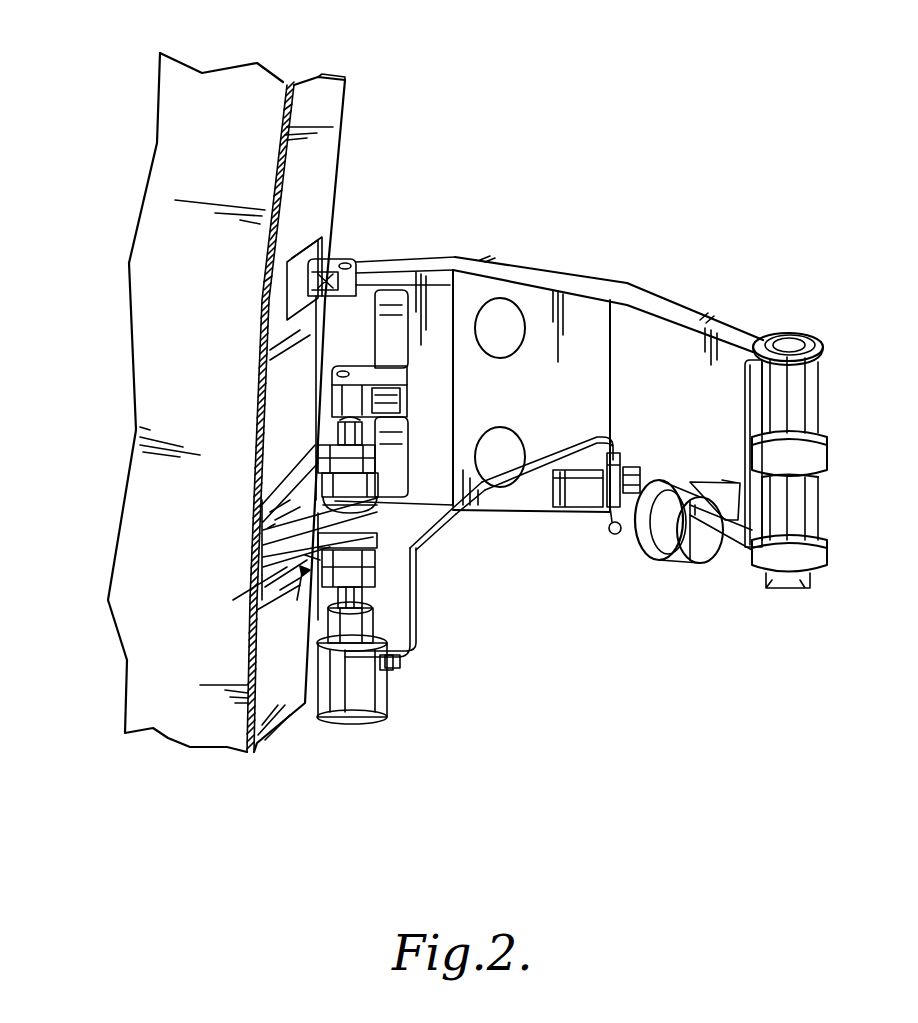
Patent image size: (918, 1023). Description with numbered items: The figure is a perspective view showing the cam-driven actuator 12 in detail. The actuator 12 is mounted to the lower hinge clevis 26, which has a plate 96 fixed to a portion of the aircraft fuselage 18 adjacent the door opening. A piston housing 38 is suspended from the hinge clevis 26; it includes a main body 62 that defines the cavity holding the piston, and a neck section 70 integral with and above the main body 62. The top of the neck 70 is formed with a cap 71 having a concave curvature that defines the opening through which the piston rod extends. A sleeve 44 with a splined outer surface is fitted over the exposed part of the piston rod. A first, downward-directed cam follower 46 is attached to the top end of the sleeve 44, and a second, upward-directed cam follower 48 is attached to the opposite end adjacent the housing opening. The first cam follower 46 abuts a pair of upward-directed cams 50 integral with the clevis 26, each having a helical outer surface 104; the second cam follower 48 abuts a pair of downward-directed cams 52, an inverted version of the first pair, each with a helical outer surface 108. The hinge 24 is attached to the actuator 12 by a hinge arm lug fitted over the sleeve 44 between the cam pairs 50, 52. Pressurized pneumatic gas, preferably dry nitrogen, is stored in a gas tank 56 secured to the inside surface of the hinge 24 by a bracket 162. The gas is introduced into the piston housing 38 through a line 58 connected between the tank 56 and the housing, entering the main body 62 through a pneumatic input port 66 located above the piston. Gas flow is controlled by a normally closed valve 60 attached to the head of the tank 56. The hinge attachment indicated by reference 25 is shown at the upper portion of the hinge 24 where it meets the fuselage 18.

The cam-driven actuator 12 is at (333, 733).
The aircraft fuselage 18 is at (235, 78).
The hinge 24 is at (690, 374).
The hinge 25 is at (320, 250).
The lower hinge clevis 26 is at (257, 488).
The piston housing 38 is at (387, 712).
The sleeve 44 is at (415, 627).
The first cam follower 46 is at (303, 450).
The second cam follower 48 is at (250, 628).
The upward-directed cams 50 is at (375, 480).
The downward-directed cams 52 is at (413, 583).
The gas tank 56 is at (702, 545).
The line 58 is at (413, 597).
The normally closed valve 60 is at (583, 507).
The main body 62 is at (350, 712).
The pneumatic input port 66 is at (400, 673).
The neck section 70 is at (412, 660).
The cap 71 is at (327, 715).
The plate 96 is at (250, 585).
The outer surface 104 is at (375, 545).
The helical outer surface 108 is at (297, 598).
The bracket 162 is at (688, 470).